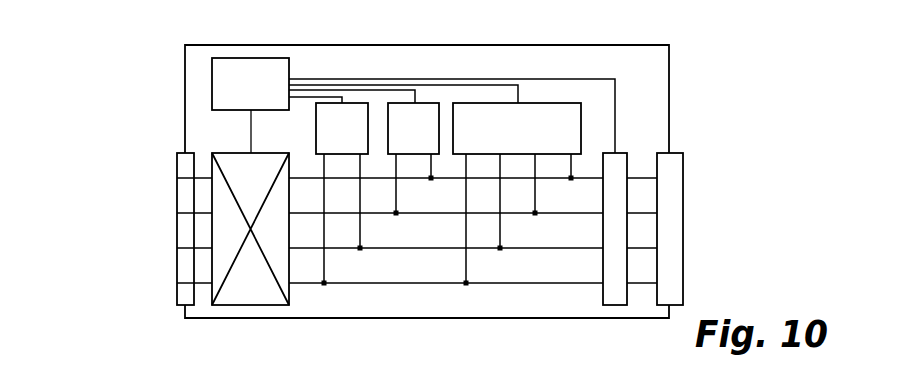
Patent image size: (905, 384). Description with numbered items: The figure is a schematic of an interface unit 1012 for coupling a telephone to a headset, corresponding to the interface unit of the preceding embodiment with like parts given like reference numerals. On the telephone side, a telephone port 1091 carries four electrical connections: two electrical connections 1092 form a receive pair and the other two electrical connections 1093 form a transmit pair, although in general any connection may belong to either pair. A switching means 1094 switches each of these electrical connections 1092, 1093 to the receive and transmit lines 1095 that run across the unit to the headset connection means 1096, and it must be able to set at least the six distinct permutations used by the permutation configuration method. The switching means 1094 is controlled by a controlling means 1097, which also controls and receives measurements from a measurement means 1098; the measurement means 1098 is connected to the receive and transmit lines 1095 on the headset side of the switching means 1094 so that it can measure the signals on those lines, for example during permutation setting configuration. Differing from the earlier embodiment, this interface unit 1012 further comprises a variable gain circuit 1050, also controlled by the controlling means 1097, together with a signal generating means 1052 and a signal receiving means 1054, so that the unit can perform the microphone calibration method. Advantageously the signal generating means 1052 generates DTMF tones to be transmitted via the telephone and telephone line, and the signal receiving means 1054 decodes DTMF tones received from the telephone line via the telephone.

The interface unit 1012 is at (578, 329).
The variable gain circuit 1050 is at (615, 228).
The signal generating means 1052 is at (343, 130).
The signal receiving means 1054 is at (413, 130).
The telephone port 1091 is at (187, 162).
The electrical connection, receive 1092 is at (187, 213).
The electrical connection, transmit 1093 is at (183, 248).
The switching means 1094 is at (257, 290).
The receive and transmit lines 1095 is at (447, 178).
The headset connection means 1096 is at (668, 230).
The controlling means 1097 is at (252, 83).
The measurement means 1098 is at (517, 130).